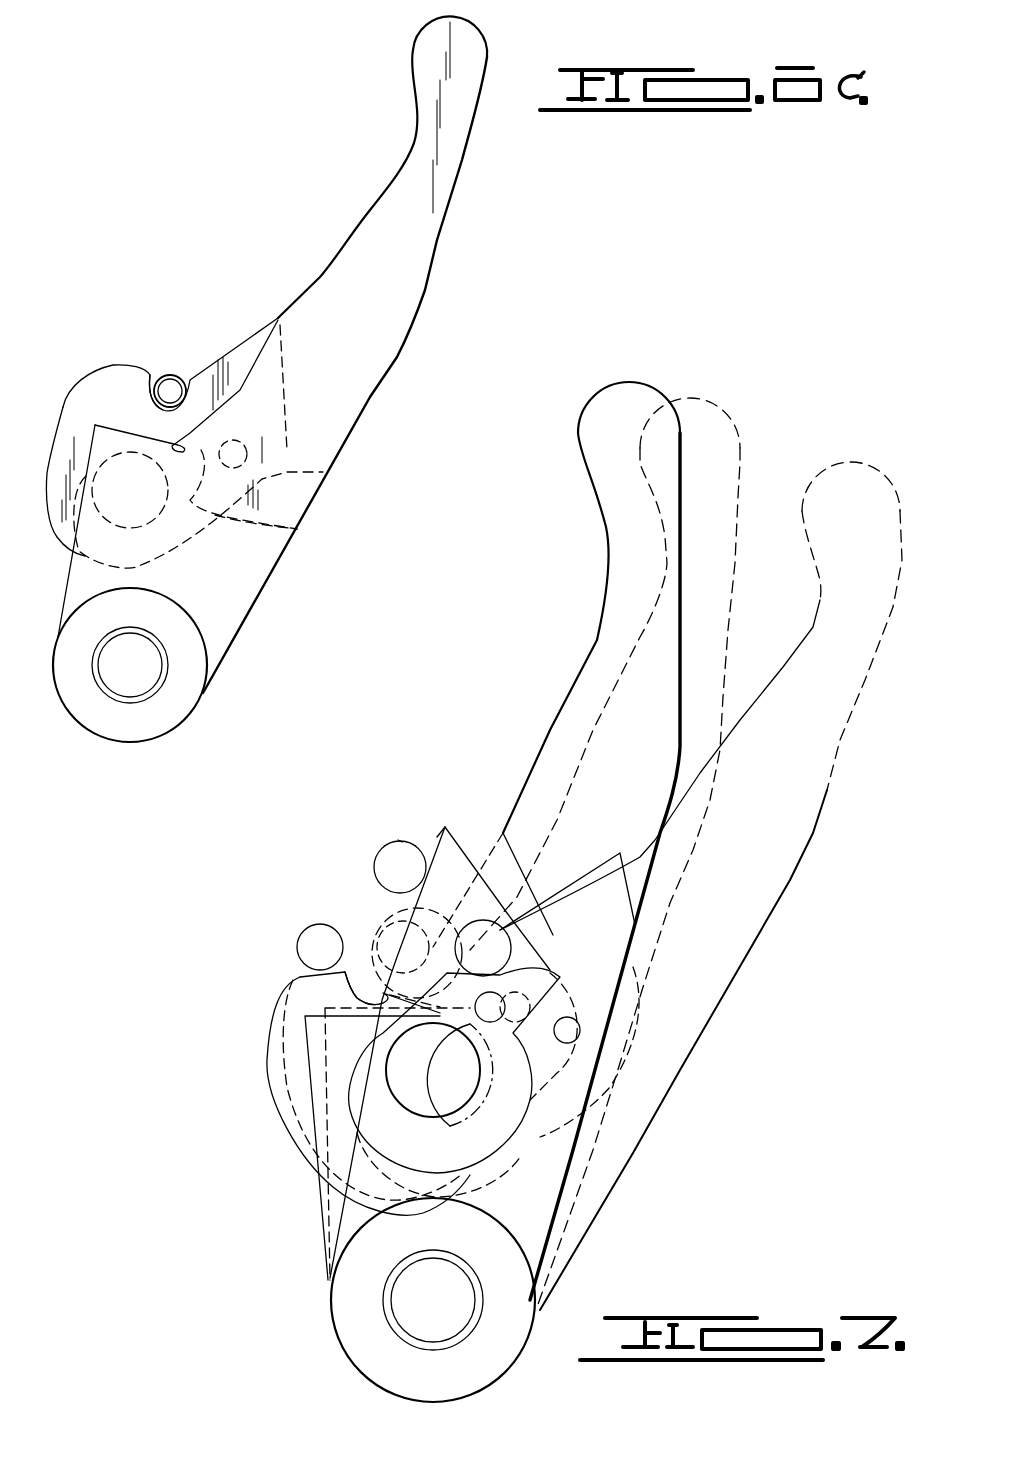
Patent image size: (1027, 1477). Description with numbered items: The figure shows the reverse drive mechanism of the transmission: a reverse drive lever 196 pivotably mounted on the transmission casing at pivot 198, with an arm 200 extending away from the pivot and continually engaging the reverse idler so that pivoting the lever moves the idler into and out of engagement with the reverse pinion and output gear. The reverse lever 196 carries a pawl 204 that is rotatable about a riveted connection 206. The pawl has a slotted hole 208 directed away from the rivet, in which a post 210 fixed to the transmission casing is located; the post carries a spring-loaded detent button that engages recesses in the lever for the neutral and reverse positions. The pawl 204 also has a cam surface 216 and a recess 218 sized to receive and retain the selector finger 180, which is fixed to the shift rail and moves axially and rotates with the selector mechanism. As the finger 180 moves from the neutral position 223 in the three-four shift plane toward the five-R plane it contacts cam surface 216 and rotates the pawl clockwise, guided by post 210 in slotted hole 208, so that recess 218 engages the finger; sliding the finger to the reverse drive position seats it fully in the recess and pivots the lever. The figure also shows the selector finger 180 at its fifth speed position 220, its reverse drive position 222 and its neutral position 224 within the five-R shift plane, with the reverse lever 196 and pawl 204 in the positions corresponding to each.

In FIG. 6c, the selector finger 180 is at (176, 380).
In FIG. 7, the selector finger 180 is at (380, 858).
In FIG. 6c, the reverse drive lever 196 is at (336, 408).
In FIG. 7, the reverse drive lever 196 is at (596, 1005).
In FIG. 6c, the pivot 198 is at (157, 668).
In FIG. 7, the pivot 198 is at (400, 1297).
In FIG. 6c, the arm 200 is at (470, 45).
In FIG. 7, the arm 200 is at (637, 397).
In FIG. 6c, the pawl 204 is at (78, 408).
In FIG. 7, the pawl 204 is at (277, 1038).
In FIG. 6c, the riveted connection 206 is at (330, 476).
In FIG. 7, the riveted connection 206 is at (553, 973).
In FIG. 6c, the slotted hole 208 is at (280, 526).
In FIG. 7, the slotted hole 208 is at (455, 1185).
In FIG. 6c, the post 210 is at (130, 473).
In FIG. 7, the post 210 is at (463, 1080).
In FIG. 7, the cam surface 216 is at (437, 837).
In FIG. 6c, the recess 218 is at (160, 380).
In FIG. 7, the recess 218 is at (350, 985).
In FIG. 7, the fifth speed position 220 is at (297, 940).
In FIG. 7, the reverse drive position 222 is at (505, 925).
In FIG. 7, the neutral position 223 is at (398, 840).
In FIG. 7, the neutral position 224 is at (409, 945).